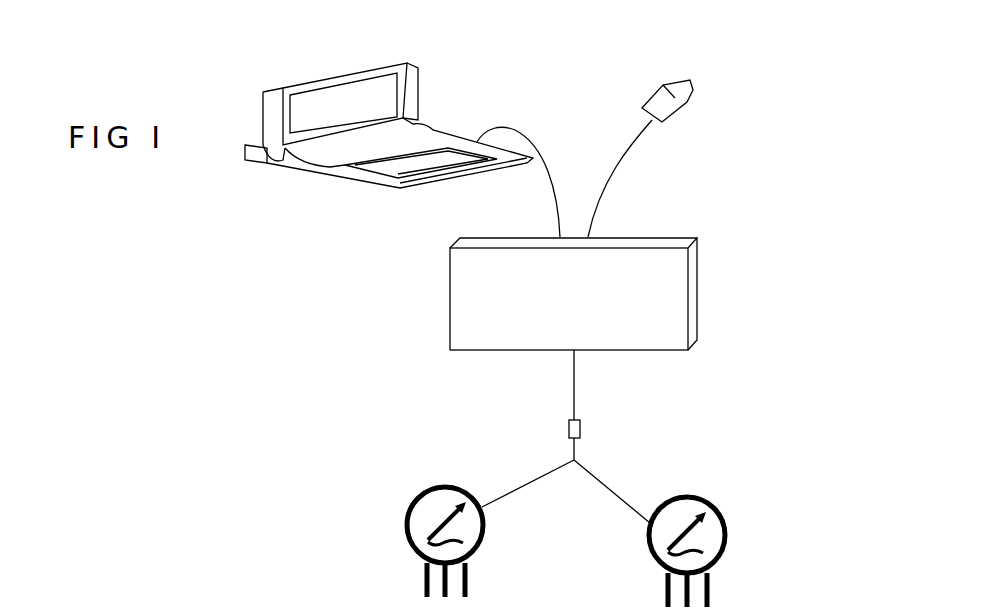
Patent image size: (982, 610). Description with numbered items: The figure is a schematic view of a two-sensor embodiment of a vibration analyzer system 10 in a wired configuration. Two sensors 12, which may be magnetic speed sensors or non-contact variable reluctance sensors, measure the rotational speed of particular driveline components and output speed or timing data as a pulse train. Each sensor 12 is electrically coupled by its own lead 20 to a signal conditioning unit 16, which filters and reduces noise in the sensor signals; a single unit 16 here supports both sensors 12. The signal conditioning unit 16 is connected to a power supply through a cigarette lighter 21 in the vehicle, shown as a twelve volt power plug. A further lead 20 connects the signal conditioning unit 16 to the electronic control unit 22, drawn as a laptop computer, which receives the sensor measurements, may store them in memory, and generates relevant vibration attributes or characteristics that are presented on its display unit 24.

The vibration analyzer system 10 is at (108, 56).
The sensor 12 is at (480, 550).
The signal conditioning unit 16 is at (700, 311).
The lead 20 is at (588, 400).
The cigarette lighter 21 is at (677, 85).
The electronic control unit 22 is at (345, 185).
The display unit 24 is at (315, 92).